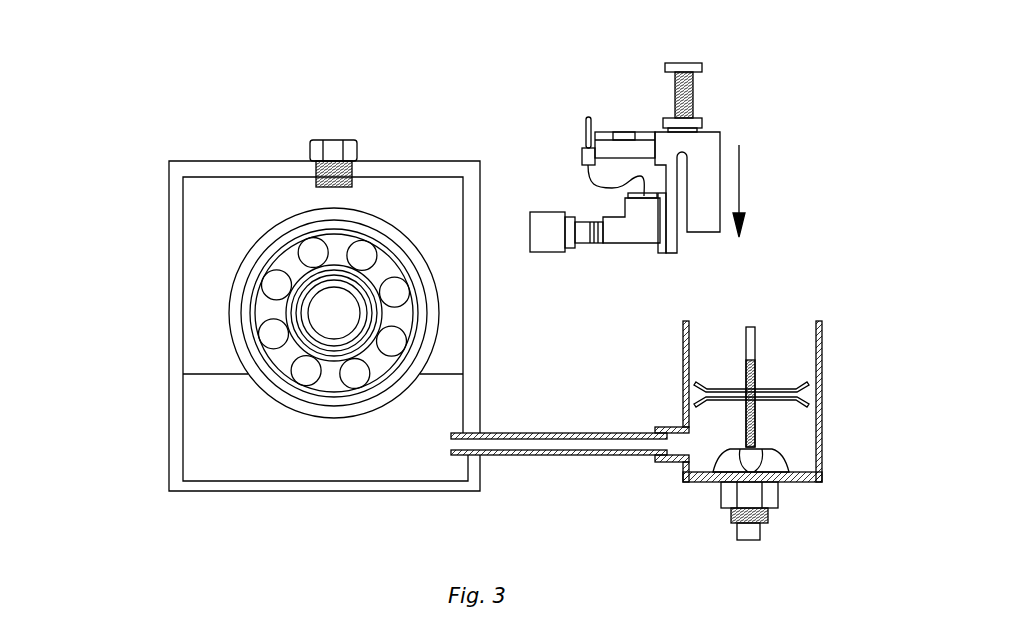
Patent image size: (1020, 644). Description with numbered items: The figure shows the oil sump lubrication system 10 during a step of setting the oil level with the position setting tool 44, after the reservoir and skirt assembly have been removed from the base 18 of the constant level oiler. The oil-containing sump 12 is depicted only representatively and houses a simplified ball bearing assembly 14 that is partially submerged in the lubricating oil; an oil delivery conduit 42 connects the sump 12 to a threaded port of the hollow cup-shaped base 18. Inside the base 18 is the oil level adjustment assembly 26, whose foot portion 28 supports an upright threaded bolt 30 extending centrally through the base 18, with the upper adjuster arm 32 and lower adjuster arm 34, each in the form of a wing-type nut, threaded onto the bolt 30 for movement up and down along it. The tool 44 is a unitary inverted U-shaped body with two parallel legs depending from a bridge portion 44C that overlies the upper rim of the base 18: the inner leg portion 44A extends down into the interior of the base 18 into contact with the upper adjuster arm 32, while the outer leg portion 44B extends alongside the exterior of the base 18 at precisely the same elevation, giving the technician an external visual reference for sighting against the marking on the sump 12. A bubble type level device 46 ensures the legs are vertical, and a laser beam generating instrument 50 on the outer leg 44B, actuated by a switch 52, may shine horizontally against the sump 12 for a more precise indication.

The oil sump lubrication system 10 is at (502, 292).
The oil-containing sump 12 is at (168, 462).
The ball bearing assembly 14 is at (438, 336).
The base 18 is at (823, 452).
The oil level adjustment assembly 26 is at (752, 318).
The foot portion 28 is at (725, 462).
The upright threaded bolt 30 is at (745, 336).
The upper adjuster arm 32 is at (698, 385).
The lower adjuster arm 34 is at (698, 405).
The oil delivery conduit 42 is at (540, 456).
The position setting tool 44 is at (647, 150).
The inner leg portion 44A is at (712, 232).
The outer leg portion 44B is at (668, 254).
The bridge portion 44C is at (711, 142).
The bubble type level device 46 is at (624, 131).
The laser beam generating instrument 50 is at (571, 200).
The switch 52 is at (586, 126).